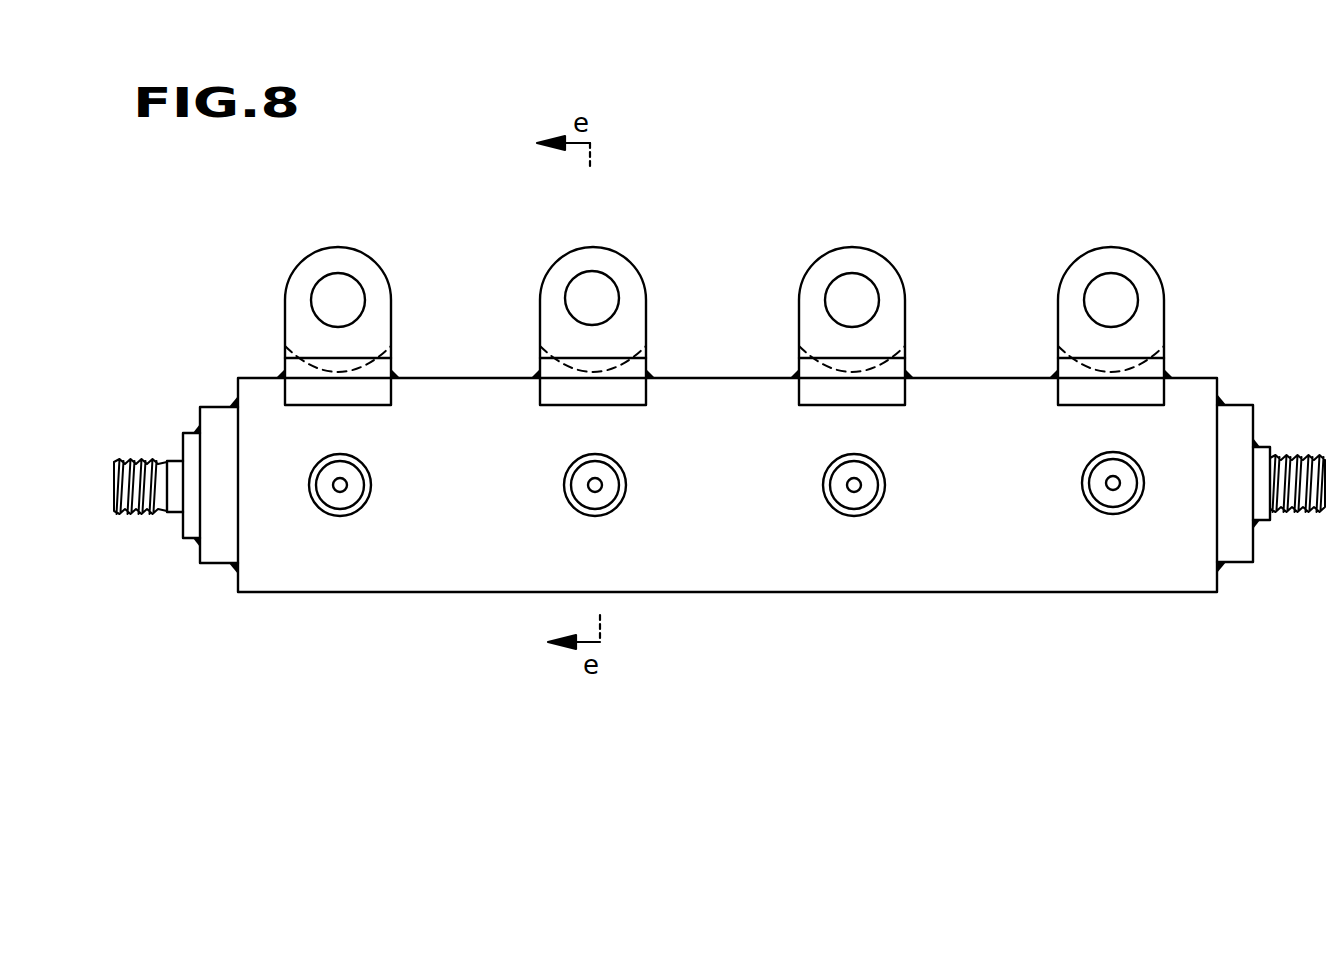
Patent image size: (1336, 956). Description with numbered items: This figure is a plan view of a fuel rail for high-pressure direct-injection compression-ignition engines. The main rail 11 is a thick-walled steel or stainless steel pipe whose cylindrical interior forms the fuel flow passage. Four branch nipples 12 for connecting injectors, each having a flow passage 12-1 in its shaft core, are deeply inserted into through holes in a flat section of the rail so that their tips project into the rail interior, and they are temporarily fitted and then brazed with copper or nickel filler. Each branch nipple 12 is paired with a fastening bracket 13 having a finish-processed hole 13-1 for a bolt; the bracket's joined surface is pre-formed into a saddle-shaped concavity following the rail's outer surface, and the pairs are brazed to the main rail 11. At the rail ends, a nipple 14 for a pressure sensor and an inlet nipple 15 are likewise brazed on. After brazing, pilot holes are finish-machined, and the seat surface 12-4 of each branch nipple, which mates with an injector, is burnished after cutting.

The main rail 11 is at (787, 540).
The branch nipple for connecting injectors 12 is at (572, 506).
The flow passage 12-1 is at (340, 485).
The seat surface 12-4 is at (863, 497).
The fastening bracket 13 is at (615, 267).
The finish-processed hole 13-1 is at (600, 298).
The pressure sensor nipple 14 is at (1310, 455).
The inlet nipple 15 is at (147, 456).